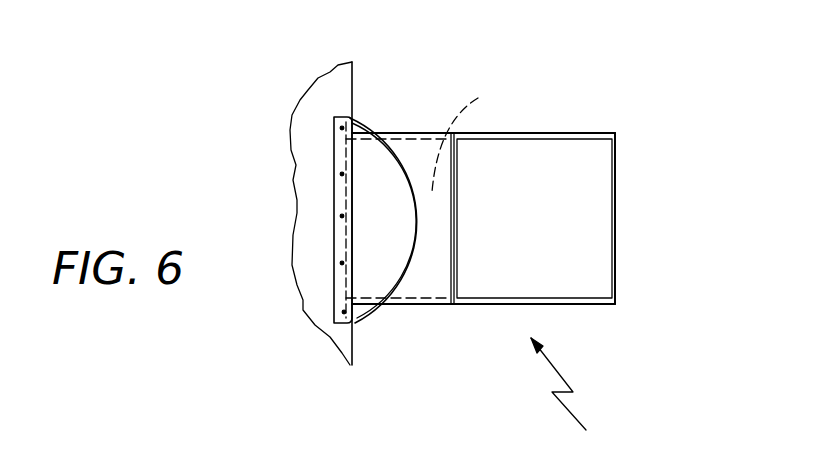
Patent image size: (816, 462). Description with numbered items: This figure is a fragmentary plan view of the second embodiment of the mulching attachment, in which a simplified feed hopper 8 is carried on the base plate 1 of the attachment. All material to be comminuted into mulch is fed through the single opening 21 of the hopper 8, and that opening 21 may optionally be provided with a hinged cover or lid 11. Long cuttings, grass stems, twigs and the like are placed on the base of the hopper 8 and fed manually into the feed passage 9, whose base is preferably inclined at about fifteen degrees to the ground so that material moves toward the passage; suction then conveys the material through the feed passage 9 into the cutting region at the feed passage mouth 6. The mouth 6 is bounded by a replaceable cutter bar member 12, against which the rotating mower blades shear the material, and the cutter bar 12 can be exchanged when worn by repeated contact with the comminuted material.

The base plate 1 is at (337, 92).
The feed passage mouth 6 is at (368, 178).
The feed hopper 8 is at (565, 397).
The feed passage 9 is at (465, 140).
The hinged cover or lid 11 is at (493, 172).
The cutter bar member 12 is at (340, 251).
The opening 21 is at (617, 195).